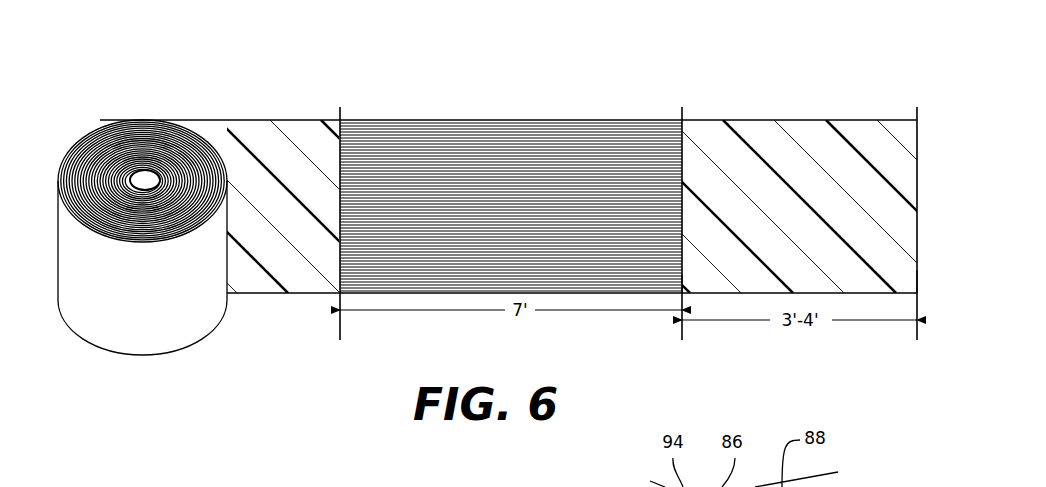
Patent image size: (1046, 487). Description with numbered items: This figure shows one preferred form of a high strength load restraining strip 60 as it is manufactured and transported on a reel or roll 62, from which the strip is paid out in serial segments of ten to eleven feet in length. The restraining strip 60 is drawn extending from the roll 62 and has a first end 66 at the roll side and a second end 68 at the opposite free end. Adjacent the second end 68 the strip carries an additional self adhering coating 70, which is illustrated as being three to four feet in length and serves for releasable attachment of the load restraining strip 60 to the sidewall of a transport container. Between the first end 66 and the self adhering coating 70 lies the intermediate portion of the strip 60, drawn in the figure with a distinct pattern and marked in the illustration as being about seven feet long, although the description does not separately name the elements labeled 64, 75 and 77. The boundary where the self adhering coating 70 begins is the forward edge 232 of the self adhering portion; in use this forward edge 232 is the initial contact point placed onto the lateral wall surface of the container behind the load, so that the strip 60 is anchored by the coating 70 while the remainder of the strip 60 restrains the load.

The load restraining strip 60 is at (729, 93).
The roll 62 is at (113, 384).
The central adhesive section 64 is at (445, 117).
The first end 66 is at (307, 120).
The second end 68 is at (913, 173).
The self adhering coating 70 is at (805, 116).
The lower corner 75 is at (913, 278).
The boundary corner 77 is at (680, 285).
The forward edge 232 is at (683, 130).